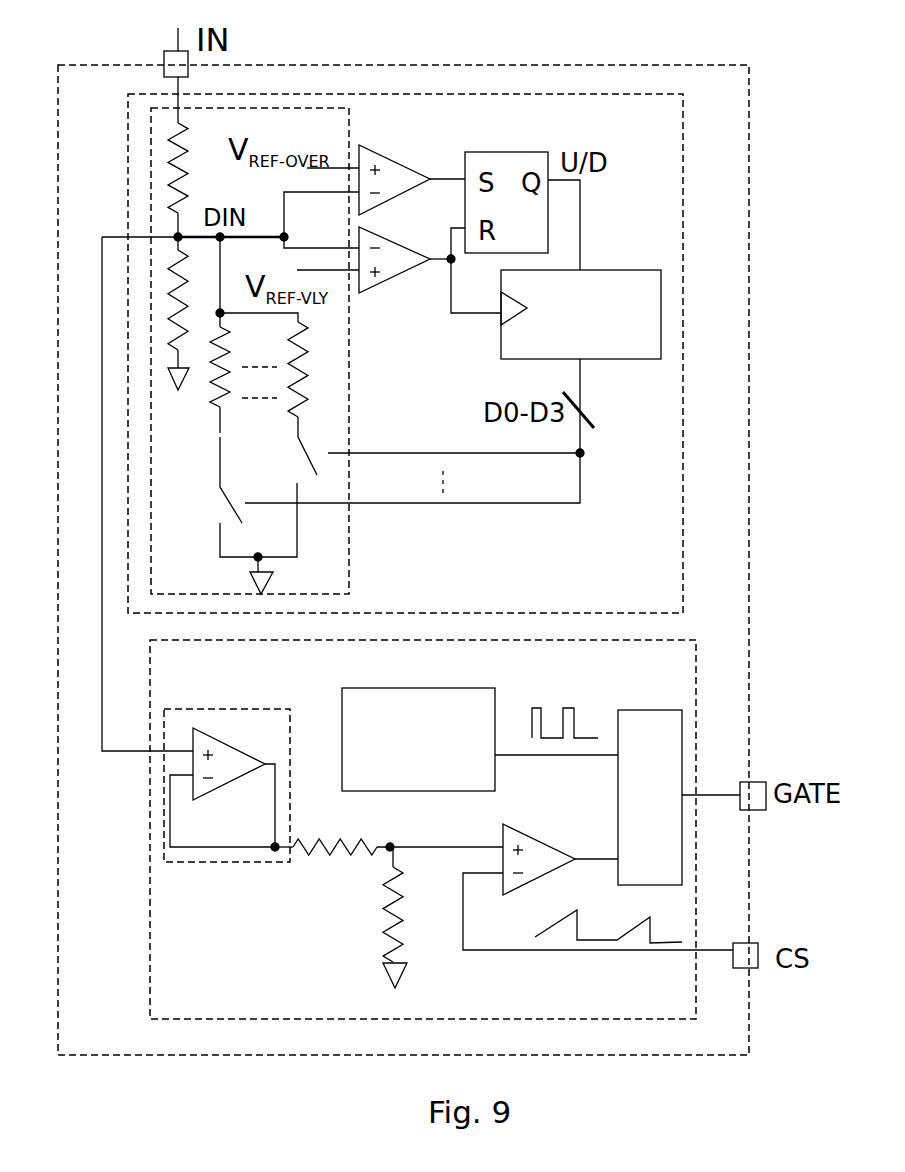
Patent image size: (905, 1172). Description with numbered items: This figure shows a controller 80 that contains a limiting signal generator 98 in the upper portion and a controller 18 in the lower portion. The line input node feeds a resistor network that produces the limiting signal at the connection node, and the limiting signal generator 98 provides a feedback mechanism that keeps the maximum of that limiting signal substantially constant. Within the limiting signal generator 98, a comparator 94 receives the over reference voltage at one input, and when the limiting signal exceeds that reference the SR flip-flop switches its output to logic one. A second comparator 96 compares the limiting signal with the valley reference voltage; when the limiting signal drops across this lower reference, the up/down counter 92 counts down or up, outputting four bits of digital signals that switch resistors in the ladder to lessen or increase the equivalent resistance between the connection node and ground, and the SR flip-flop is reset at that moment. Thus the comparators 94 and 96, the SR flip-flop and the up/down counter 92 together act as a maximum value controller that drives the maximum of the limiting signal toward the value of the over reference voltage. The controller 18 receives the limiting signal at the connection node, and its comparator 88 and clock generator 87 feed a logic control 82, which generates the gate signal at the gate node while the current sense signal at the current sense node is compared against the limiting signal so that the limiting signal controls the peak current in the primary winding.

The controller 80 is at (515, 63).
The limiting signal generator 98 is at (683, 278).
The comparator 94 is at (393, 158).
The comparator 96 is at (395, 235).
The up/down counter 92 is at (573, 331).
The controller 18 is at (693, 688).
The comparator 88 is at (245, 712).
The clock generator 87 is at (403, 755).
The logic control 82 is at (636, 815).